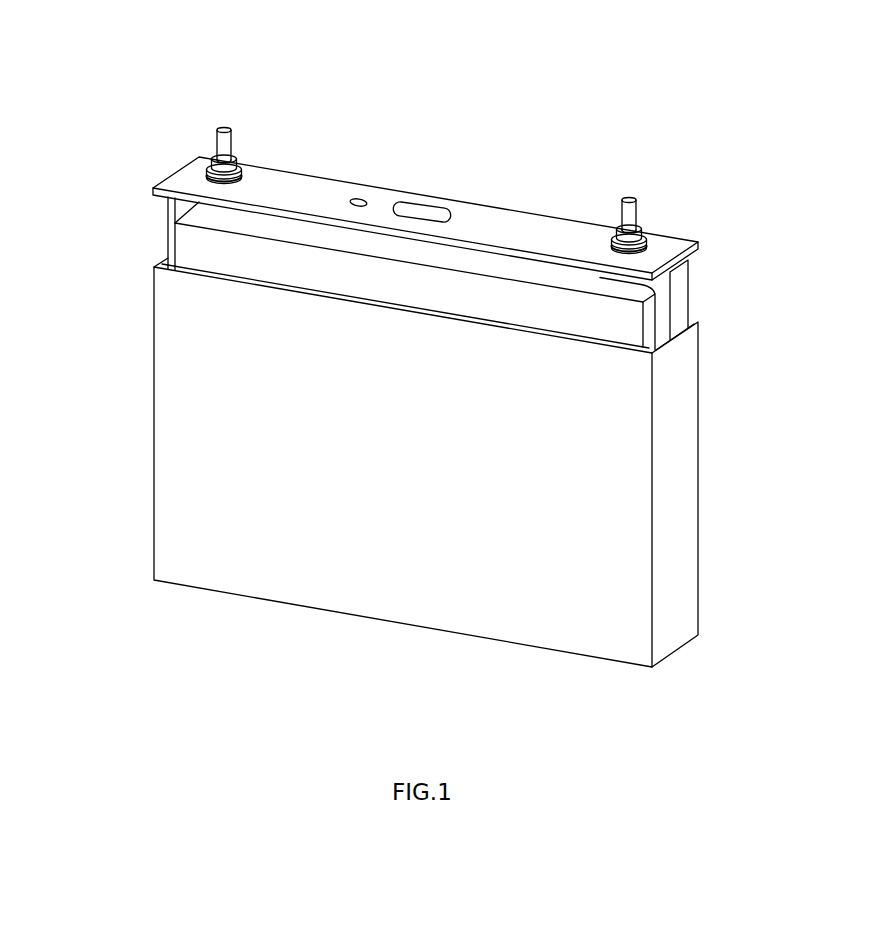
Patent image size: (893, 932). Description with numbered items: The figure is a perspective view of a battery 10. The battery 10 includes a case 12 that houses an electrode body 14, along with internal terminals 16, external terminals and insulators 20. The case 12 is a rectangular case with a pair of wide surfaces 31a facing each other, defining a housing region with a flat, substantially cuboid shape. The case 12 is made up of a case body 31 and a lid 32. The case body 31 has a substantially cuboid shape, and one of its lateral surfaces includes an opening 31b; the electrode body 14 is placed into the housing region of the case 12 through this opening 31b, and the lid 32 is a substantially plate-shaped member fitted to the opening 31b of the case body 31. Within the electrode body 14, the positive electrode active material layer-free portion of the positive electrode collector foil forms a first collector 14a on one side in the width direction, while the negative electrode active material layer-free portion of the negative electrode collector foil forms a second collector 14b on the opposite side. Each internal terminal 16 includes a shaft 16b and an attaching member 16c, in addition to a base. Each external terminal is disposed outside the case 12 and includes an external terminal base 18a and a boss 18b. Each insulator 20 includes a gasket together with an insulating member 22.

The battery 10 is at (192, 88).
The case 12 is at (140, 380).
The electrode body 14 is at (355, 283).
The first collector 14a is at (168, 248).
The second collector 14b is at (648, 326).
The internal terminal 16 is at (138, 239).
The shaft 16b is at (227, 141).
The attaching member 16c is at (176, 220).
The external terminal base 18a is at (210, 162).
The boss 18b is at (243, 177).
The insulator 20 is at (262, 187).
The insulating member 22 is at (234, 181).
The case body 31 is at (150, 505).
The wide surface 31a is at (407, 506).
The opening 31b is at (536, 324).
The lid 32 is at (469, 198).